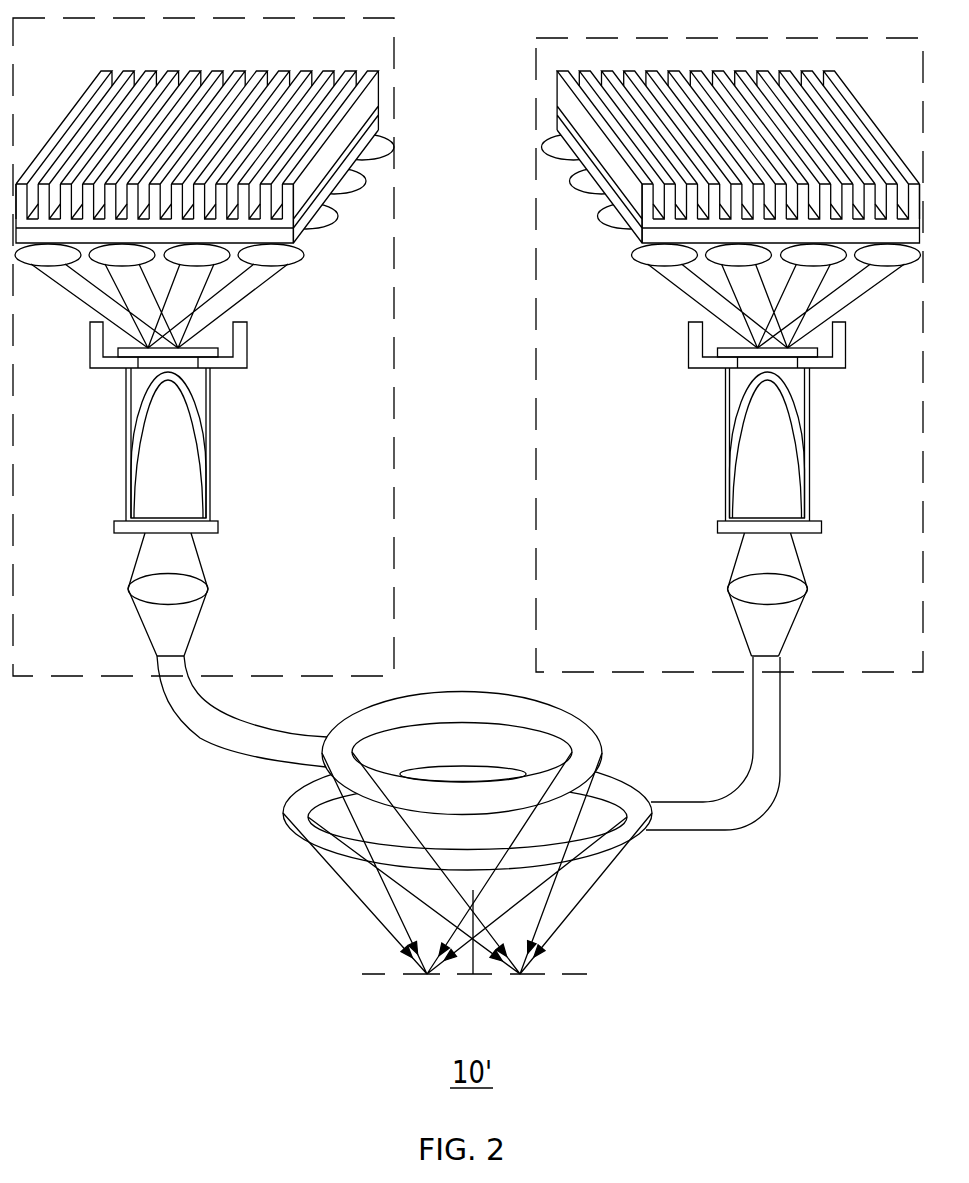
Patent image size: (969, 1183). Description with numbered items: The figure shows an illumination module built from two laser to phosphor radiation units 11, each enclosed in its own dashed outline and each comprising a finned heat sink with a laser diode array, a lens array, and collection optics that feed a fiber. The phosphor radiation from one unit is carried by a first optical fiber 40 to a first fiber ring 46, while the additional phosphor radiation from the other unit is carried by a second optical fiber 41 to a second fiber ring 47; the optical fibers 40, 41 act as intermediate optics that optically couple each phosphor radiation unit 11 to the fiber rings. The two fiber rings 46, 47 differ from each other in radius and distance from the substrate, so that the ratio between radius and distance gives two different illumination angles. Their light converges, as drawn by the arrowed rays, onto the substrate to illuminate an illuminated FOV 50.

The laser to phosphor radiation unit 11 is at (310, 530).
The optical fiber 40 is at (190, 718).
The optical fiber 41 is at (780, 733).
The fiber ring 46 is at (547, 715).
The fiber ring 47 is at (623, 790).
The illuminated FOV 50 is at (341, 952).